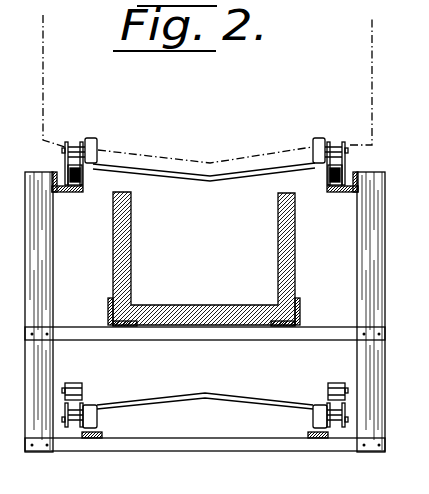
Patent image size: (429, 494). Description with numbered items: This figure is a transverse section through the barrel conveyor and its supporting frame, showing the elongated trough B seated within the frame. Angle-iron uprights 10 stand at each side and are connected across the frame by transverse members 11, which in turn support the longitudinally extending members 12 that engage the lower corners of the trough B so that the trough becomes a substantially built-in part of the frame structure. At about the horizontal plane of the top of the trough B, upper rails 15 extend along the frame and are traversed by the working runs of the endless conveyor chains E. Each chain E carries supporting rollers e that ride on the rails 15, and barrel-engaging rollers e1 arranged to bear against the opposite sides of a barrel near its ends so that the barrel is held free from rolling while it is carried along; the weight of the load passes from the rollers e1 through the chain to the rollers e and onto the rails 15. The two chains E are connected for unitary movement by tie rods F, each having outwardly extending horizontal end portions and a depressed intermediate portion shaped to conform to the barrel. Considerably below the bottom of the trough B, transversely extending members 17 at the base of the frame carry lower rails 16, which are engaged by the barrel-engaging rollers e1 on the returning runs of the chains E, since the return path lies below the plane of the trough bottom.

The uprights 10 is at (33, 344).
The transverse members 11 is at (205, 337).
The transversely extending members 17 is at (178, 448).
The longitudinally extending members 12 is at (108, 306).
The upper rails 15 is at (80, 193).
The lower rails 16 is at (100, 436).
The trough B is at (278, 248).
The endless traveling conveyor chains E is at (61, 173).
The supporting rollers e is at (82, 186).
The barrel-engaging rollers e1 is at (96, 147).
The tie rods F is at (209, 170).